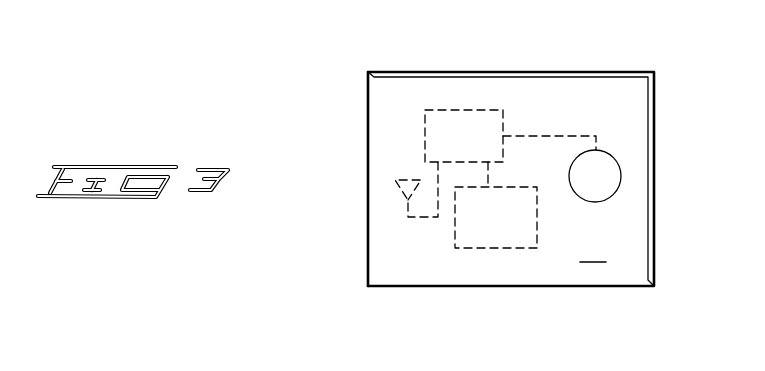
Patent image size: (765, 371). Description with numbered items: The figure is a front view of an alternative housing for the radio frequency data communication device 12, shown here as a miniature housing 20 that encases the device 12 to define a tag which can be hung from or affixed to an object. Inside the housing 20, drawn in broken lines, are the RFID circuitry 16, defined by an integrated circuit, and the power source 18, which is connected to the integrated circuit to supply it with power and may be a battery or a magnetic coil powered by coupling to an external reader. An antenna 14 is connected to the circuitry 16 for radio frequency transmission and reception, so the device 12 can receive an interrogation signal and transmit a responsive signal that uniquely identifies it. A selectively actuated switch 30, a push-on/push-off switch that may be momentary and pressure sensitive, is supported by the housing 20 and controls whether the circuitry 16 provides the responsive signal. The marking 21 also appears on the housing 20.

The radio frequency data communication device 12 is at (540, 108).
The antenna 14 is at (405, 178).
The RFID circuitry 16 is at (464, 110).
The power source 18 is at (493, 250).
The housing 20 is at (368, 188).
The identifier marking 21 is at (593, 249).
The switch 30 is at (621, 176).